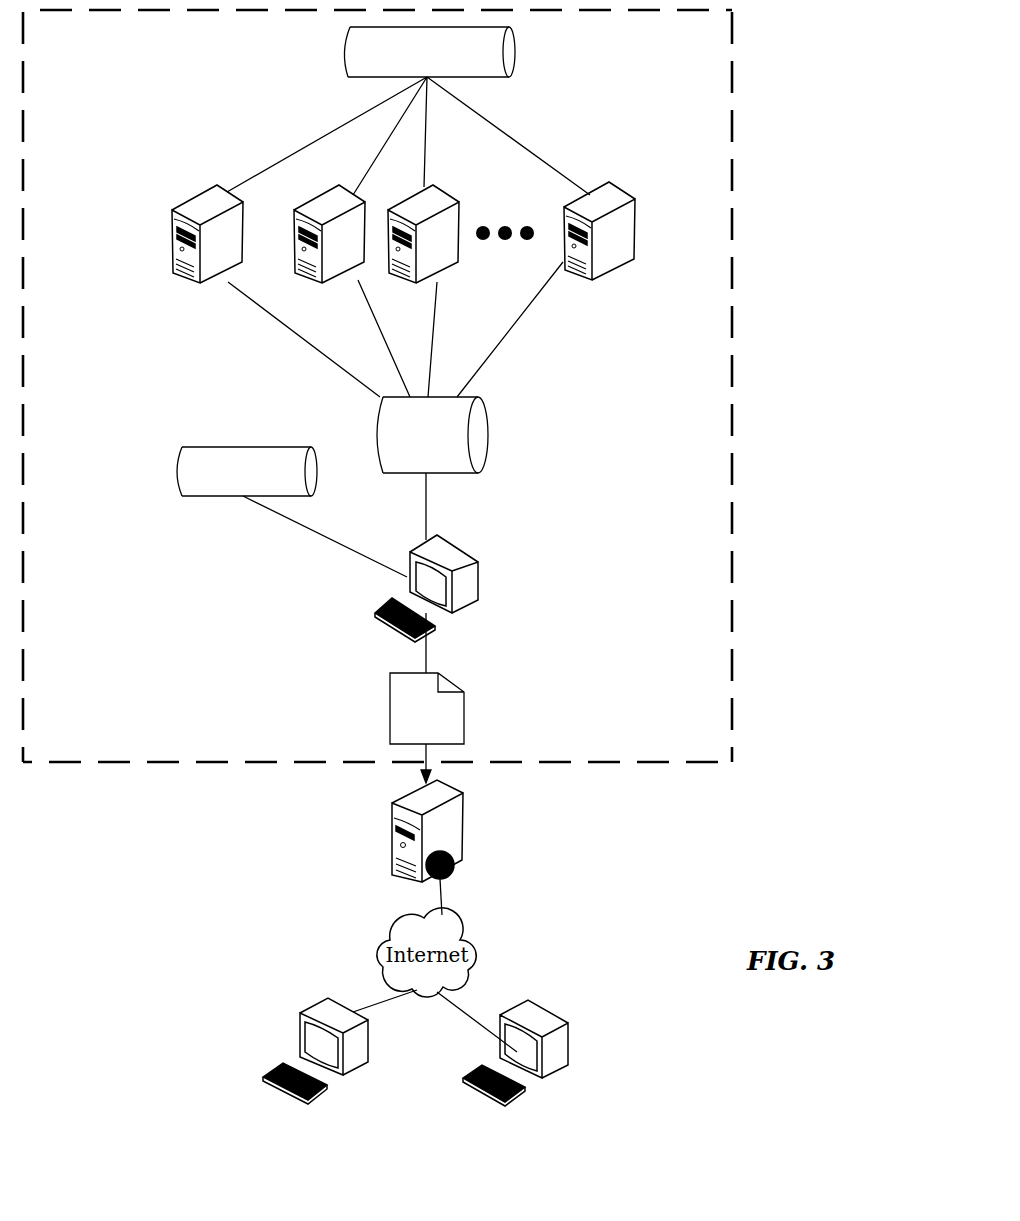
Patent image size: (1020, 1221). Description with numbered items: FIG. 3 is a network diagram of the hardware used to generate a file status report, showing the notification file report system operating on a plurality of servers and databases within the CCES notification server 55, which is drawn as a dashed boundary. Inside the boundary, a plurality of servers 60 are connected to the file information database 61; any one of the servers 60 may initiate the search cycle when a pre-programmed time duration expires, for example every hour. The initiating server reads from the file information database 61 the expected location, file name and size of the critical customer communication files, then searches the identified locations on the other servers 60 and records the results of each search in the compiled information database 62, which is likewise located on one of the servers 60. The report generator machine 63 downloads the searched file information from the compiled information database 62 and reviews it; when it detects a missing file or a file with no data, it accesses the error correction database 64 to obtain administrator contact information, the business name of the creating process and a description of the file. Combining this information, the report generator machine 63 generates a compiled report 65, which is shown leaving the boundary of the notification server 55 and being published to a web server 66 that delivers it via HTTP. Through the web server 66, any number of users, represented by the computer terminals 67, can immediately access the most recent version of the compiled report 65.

The CCES notification server 55 is at (168, 763).
The servers 60 is at (657, 213).
The file information database 61 is at (515, 50).
The compiled information database 62 is at (488, 435).
The report generator machine 63 is at (478, 563).
The error correction database 64 is at (175, 472).
The compiled report 65 is at (464, 708).
The web server 66 is at (427, 833).
The computer terminals 67 is at (612, 1048).